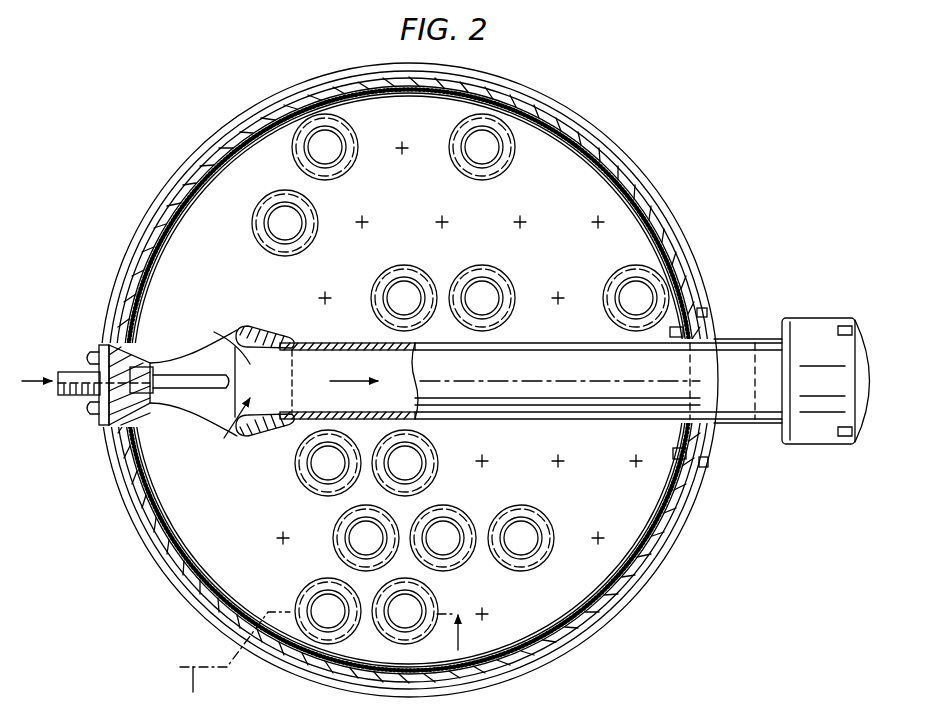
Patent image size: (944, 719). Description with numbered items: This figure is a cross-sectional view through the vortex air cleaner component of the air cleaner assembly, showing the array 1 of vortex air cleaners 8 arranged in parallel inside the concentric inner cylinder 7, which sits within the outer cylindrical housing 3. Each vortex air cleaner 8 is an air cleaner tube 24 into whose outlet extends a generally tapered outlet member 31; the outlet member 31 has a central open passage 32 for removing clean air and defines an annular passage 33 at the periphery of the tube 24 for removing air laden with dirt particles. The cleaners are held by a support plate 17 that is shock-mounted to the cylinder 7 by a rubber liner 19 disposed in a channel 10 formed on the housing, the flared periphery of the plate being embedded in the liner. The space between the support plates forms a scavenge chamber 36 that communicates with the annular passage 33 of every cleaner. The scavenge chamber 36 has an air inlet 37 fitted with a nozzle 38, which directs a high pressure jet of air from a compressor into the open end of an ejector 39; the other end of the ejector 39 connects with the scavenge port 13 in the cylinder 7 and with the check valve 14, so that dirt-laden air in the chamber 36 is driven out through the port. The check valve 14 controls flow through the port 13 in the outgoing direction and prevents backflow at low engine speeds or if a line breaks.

The array of vortex-type air cleaners 1 is at (268, 158).
The cylindrical housing 3 is at (321, 659).
The concentric inner cylinder 7 is at (622, 168).
The vortex air cleaner 8 is at (328, 182).
The channel 10 is at (648, 582).
The scavenge port 13 is at (740, 348).
The check valve 14 is at (816, 330).
The support plate 17 is at (160, 497).
The rubber liner 19 is at (589, 609).
The air cleaner tube 24 is at (463, 268).
The outlet member 31 is at (504, 290).
The central open passage 32 is at (474, 158).
The annular passage 33 is at (394, 272).
The scavenge chamber 36 is at (246, 487).
The air inlet 37 is at (68, 373).
The nozzle 38 is at (184, 380).
The ejector 39 is at (348, 344).